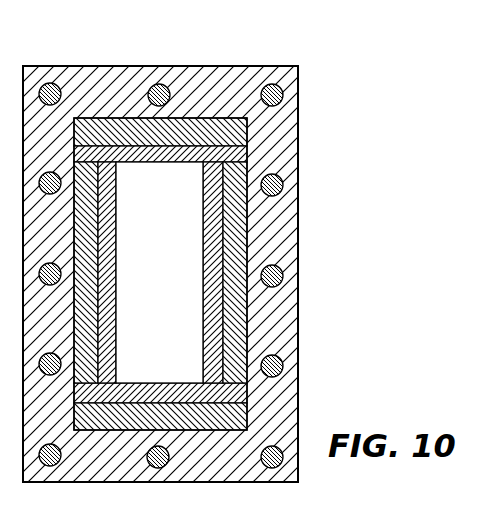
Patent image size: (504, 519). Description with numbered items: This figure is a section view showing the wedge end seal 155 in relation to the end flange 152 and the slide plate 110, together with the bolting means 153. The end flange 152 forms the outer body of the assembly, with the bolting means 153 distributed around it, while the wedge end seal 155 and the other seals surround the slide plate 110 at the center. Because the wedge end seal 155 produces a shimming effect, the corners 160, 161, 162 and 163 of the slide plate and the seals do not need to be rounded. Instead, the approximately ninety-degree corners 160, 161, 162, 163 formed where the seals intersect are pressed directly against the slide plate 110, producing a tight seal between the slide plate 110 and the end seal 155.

The slide plate 110 is at (187, 272).
The end flange 152 is at (290, 117).
The bolting means 153 is at (281, 177).
The wedge end seal 155 is at (213, 118).
The corner 160 is at (117, 165).
The corner 161 is at (202, 164).
The corner 162 is at (118, 383).
The corner 163 is at (200, 383).